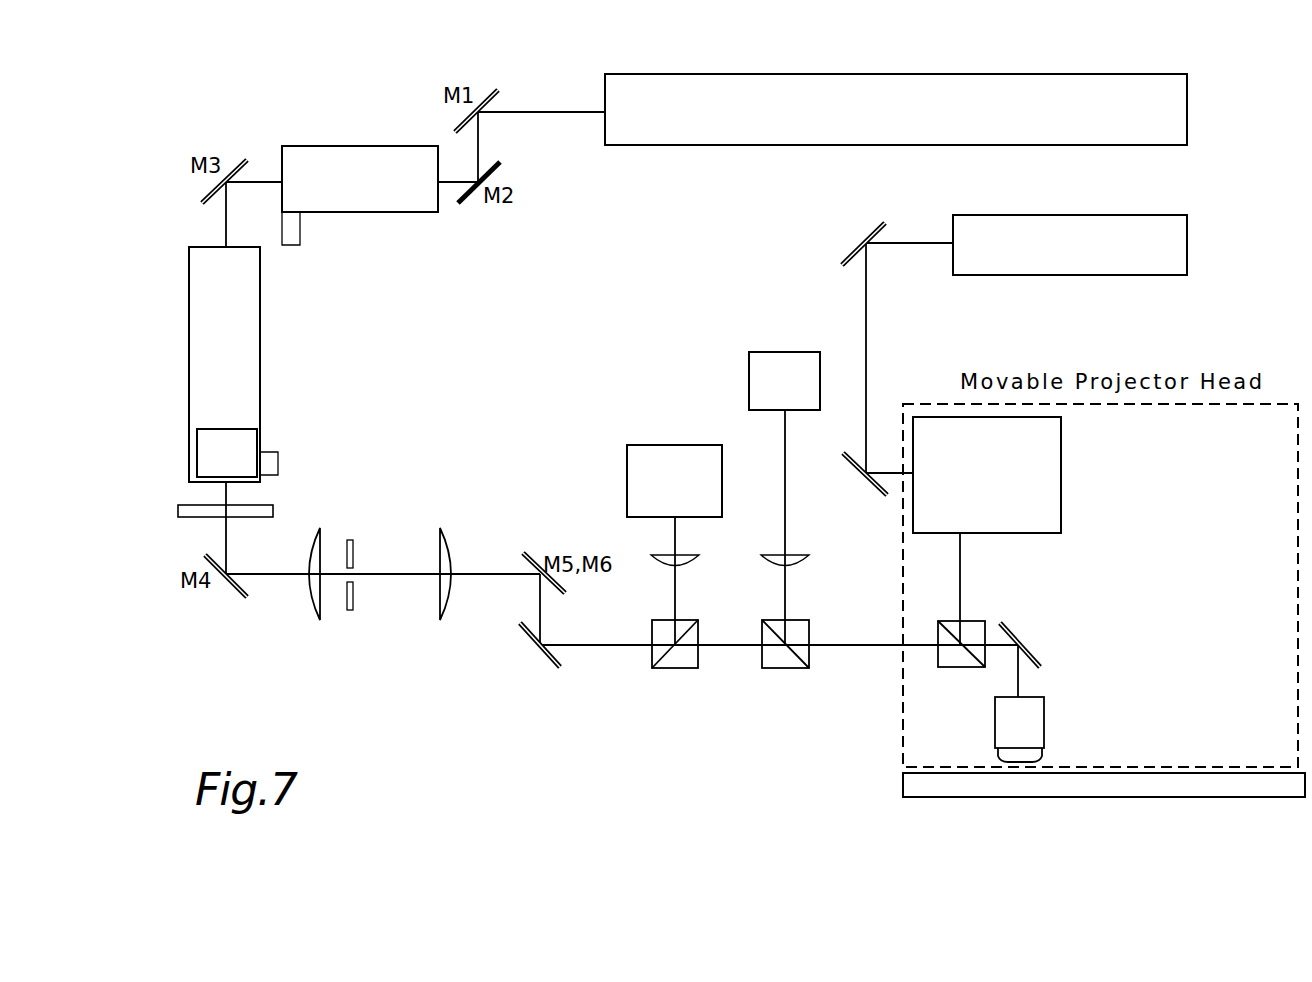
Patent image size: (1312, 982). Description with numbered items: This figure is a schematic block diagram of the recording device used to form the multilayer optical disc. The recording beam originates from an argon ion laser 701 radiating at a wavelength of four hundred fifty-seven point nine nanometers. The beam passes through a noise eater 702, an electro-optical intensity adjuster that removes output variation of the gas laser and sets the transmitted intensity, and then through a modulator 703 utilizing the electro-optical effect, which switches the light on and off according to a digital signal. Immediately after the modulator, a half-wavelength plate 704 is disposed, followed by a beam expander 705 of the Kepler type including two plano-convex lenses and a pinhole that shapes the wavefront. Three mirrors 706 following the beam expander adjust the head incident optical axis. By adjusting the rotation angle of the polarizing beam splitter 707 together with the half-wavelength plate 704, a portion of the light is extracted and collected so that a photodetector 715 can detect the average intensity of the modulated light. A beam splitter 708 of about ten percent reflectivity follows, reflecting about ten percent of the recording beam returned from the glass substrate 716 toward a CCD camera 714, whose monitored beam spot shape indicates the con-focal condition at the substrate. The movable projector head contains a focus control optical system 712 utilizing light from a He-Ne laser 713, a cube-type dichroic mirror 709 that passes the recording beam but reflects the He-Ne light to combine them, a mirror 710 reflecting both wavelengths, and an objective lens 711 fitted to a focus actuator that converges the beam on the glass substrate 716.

The argon ion laser 701 is at (1188, 104).
The noise eater 702 is at (361, 146).
The modulator 703 is at (189, 355).
The half-wavelength plate 704 is at (188, 491).
The beam expander 705 is at (388, 522).
The mirrors 706 is at (498, 615).
The polarizing beam splitter 707 is at (650, 662).
The beam splitter 708 is at (812, 662).
The dichroic mirror 709 is at (945, 620).
The mirror 710 is at (1053, 653).
The objective lens 711 is at (995, 728).
The focus control optical system 712 is at (1062, 478).
The He-Ne laser 713 is at (1188, 241).
The CCD camera 714 is at (784, 352).
The photodetector 715 is at (674, 445).
The glass substrate 716 is at (1240, 798).